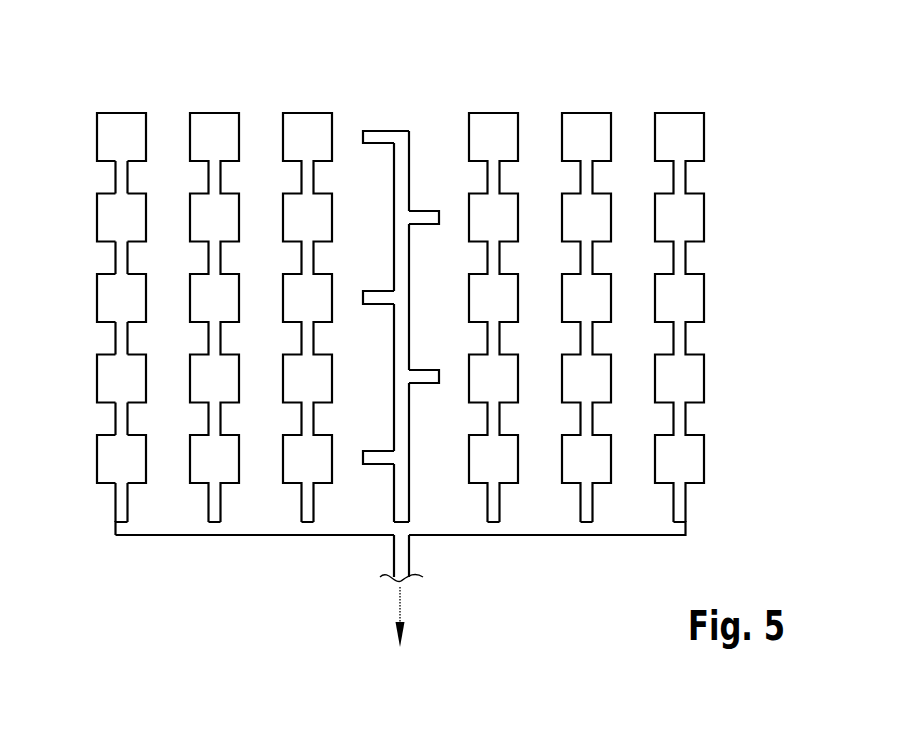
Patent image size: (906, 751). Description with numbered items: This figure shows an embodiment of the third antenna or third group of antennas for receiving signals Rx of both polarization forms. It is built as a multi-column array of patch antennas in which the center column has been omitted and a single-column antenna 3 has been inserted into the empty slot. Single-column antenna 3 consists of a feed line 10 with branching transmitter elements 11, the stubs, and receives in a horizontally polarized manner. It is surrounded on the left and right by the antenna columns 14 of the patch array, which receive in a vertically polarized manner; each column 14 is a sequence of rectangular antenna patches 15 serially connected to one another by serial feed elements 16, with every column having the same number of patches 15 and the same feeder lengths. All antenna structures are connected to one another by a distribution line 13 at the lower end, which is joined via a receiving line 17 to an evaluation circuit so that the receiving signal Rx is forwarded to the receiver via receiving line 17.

The single-column antenna 3 is at (385, 103).
The feed line 10 is at (409, 418).
The transmitter elements 11 is at (377, 143).
The distribution line 13 is at (255, 536).
The antenna columns 14 is at (122, 83).
The antenna patches 15 is at (97, 298).
The serial feed elements 16 is at (115, 340).
The receiving line 17 is at (409, 557).